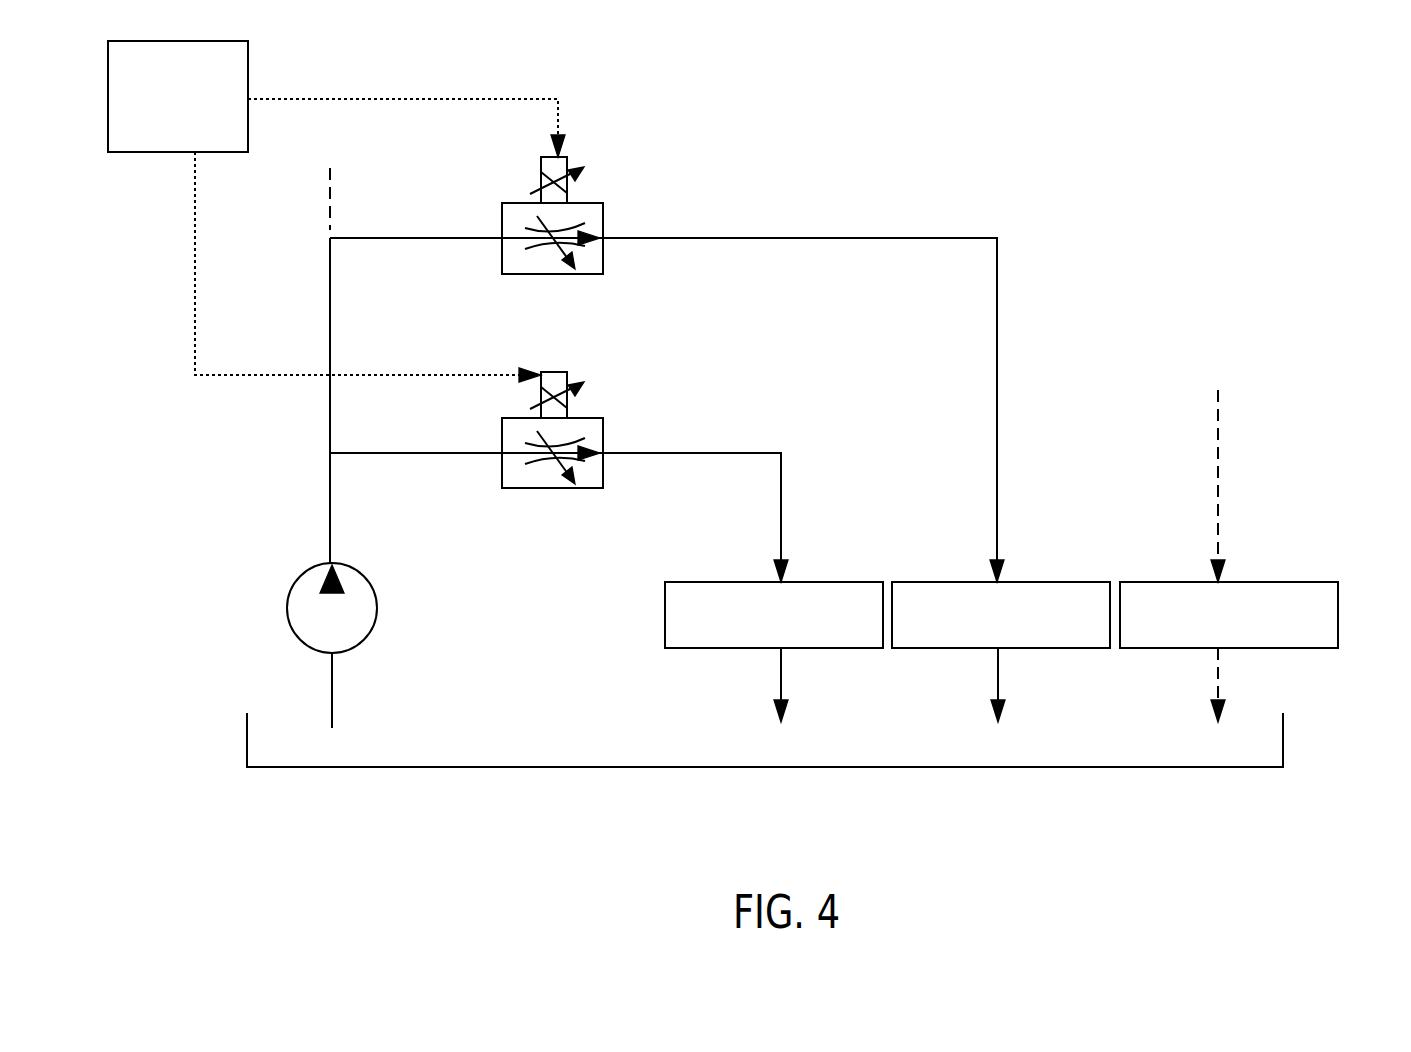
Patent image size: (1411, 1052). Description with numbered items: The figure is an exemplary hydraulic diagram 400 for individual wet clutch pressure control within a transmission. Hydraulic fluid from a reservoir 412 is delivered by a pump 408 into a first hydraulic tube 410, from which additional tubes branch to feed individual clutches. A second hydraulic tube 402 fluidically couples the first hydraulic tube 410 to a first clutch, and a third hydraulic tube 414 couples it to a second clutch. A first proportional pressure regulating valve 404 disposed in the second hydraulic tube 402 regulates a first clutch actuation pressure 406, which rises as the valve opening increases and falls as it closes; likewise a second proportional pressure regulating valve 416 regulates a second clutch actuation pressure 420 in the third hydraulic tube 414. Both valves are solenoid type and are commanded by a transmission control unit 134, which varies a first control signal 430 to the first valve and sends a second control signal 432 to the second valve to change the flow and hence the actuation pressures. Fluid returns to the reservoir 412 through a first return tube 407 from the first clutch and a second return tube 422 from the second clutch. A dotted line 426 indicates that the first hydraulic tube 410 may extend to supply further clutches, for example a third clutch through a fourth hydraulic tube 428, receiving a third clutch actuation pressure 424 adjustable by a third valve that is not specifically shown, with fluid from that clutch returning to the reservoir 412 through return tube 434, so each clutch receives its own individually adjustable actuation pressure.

The hydraulic diagram 400 is at (1322, 53).
The transmission control unit 134 is at (195, 108).
The second control signal 432 is at (340, 99).
The first control signal 430 is at (225, 375).
The dotted line 426 is at (333, 200).
The third hydraulic tube 414 is at (395, 238).
The second proportional pressure regulating valve 416 is at (595, 203).
The second hydraulic tube 402 is at (385, 453).
The first proportional pressure regulating valve 404 is at (596, 418).
The first hydraulic tube 410 is at (332, 520).
The pump 408 is at (362, 573).
The first clutch actuation pressure 406 is at (805, 582).
The second clutch actuation pressure 420 is at (1033, 582).
The third clutch actuation pressure 424 is at (1270, 582).
The fourth hydraulic tube 428 is at (1220, 452).
The first return tube 407 is at (781, 680).
The second return tube 422 is at (998, 680).
The return tube 434 is at (1218, 680).
The reservoir 412 is at (485, 767).